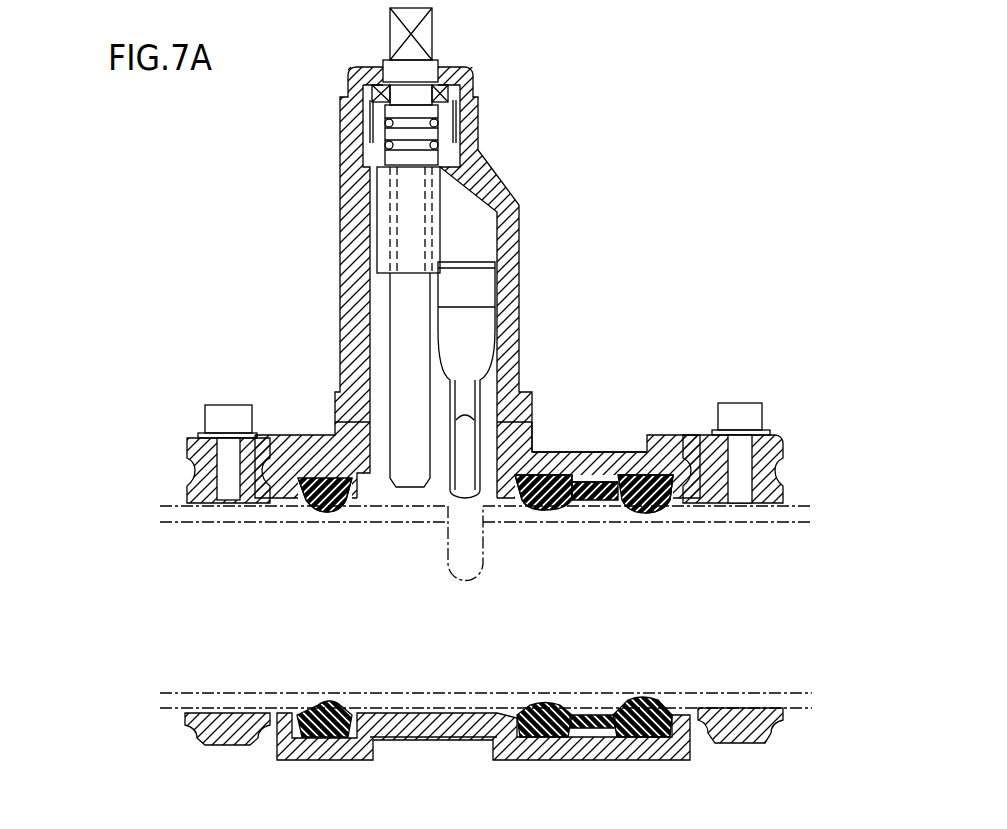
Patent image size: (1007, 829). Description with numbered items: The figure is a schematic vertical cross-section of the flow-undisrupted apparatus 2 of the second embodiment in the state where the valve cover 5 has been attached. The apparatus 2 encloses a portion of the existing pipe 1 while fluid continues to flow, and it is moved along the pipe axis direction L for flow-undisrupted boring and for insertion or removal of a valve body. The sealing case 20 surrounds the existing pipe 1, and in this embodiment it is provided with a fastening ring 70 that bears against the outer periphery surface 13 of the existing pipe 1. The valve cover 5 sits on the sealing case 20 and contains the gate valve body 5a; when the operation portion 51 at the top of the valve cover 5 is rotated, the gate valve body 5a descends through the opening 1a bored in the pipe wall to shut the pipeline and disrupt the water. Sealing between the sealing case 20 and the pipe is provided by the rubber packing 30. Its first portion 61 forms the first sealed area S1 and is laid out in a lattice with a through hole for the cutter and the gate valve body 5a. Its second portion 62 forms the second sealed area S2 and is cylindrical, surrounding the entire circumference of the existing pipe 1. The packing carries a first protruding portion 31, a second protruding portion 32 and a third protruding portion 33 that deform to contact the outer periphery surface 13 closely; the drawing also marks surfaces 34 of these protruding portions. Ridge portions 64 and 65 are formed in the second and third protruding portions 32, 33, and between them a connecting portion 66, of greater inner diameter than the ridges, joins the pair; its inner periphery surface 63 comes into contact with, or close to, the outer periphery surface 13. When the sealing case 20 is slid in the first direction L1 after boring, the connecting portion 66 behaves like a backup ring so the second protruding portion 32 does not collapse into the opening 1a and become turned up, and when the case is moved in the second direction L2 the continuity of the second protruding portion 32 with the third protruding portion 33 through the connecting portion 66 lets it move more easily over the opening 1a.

The existing pipe 1 is at (170, 506).
The opening 1a is at (470, 538).
The present apparatus 2 is at (216, 156).
The valve cover 5 is at (345, 216).
The gate valve body 5a is at (482, 400).
The outer periphery surface 13 is at (800, 500).
The sealing case 20 is at (305, 438).
The rubber packing 30 is at (307, 503).
The first protruding portion 31 is at (327, 513).
The second protruding portion 32 is at (543, 507).
The third protruding portion 33 is at (665, 505).
The seal side face 34 is at (340, 510).
The operation portion 51 is at (434, 22).
The first portion 61 is at (440, 495).
The second portion 62 is at (610, 504).
The inner periphery surface 63 is at (587, 503).
The ridge portion 64 is at (550, 508).
The ridge portion 65 is at (647, 513).
The connecting portion 66 is at (590, 478).
The fastening ring 70 is at (195, 482).
The first sealed area S1 is at (383, 494).
The second sealed area S2 is at (597, 503).
The pipe axis direction L is at (249, 615).
The first direction L1 is at (630, 347).
The second direction L2 is at (712, 347).